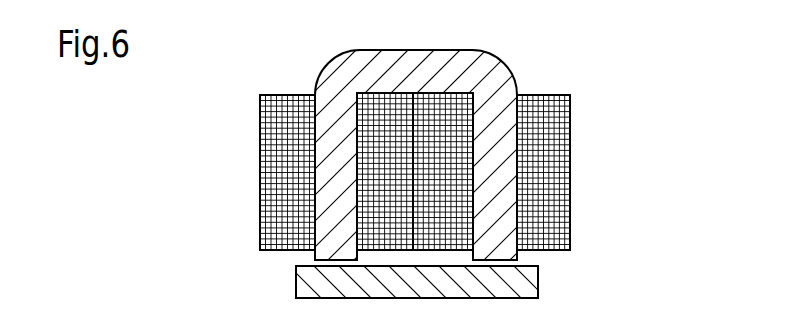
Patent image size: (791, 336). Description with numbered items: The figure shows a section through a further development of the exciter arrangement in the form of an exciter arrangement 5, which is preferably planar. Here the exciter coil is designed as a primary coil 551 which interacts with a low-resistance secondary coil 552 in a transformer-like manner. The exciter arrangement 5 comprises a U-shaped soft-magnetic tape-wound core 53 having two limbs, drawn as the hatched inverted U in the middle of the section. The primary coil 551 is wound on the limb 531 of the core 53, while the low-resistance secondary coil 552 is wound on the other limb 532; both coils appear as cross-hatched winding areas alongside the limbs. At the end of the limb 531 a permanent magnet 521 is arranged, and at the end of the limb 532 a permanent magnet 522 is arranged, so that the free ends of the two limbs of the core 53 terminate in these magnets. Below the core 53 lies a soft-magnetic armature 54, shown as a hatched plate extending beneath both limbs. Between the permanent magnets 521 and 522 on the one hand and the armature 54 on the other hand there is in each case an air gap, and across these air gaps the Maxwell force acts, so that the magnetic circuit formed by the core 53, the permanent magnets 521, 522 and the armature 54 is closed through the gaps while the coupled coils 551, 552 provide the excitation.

The exciter arrangement 5 is at (423, 28).
The U-shaped soft-magnetic tape-wound core 53 is at (496, 76).
The limb 531 is at (333, 123).
The limb 532 is at (500, 123).
The permanent magnet 521 is at (320, 255).
The permanent magnet 522 is at (500, 252).
The primary coil 551 is at (273, 165).
The low-resistance secondary coil 552 is at (558, 170).
The soft-magnetic armature 54 is at (527, 282).